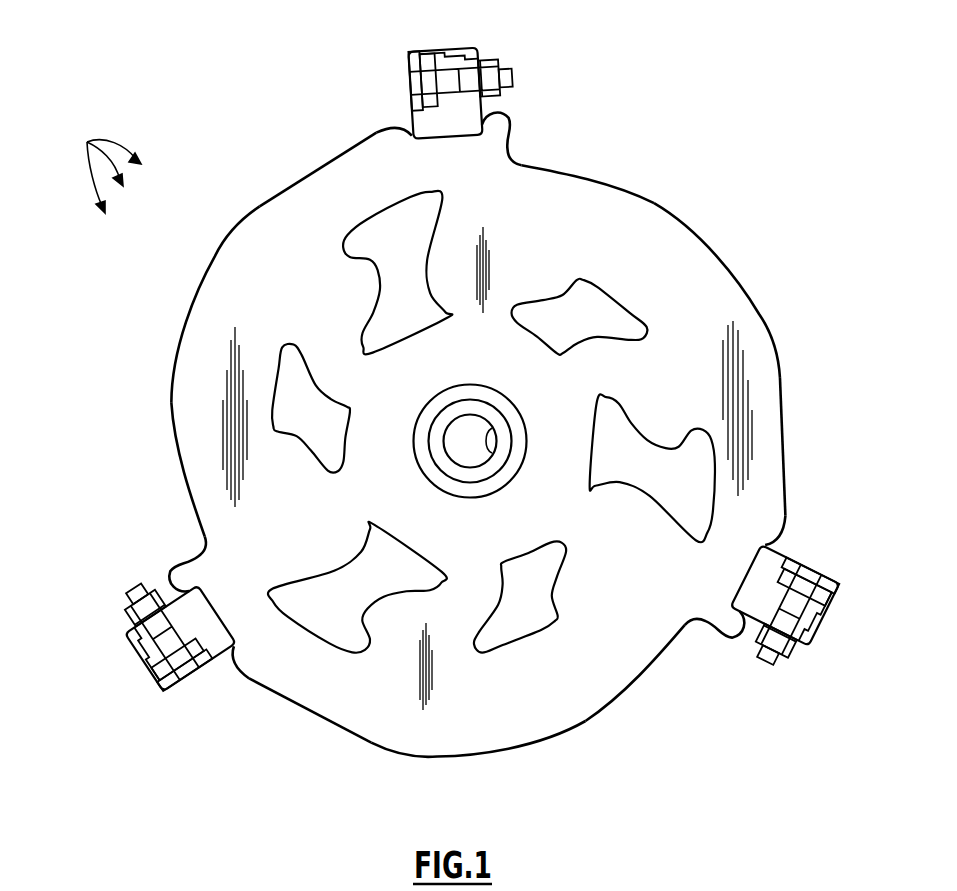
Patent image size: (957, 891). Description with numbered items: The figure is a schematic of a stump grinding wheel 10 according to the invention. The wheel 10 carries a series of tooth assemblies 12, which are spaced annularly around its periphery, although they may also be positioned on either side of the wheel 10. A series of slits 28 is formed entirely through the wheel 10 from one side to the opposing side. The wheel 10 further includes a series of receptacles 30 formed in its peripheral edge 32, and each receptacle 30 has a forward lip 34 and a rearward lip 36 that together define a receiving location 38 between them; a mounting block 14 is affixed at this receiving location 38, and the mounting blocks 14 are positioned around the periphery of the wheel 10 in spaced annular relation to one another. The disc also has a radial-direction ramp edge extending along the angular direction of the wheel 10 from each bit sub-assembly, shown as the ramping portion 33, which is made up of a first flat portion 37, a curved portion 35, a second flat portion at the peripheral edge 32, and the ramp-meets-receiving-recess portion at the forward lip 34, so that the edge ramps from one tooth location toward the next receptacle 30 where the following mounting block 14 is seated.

The stump grinding wheel 10 is at (199, 103).
The tooth assembly 12 is at (217, 311).
The mounting block 14 is at (458, 60).
The slit 28 is at (560, 313).
The receptacle 30 is at (482, 369).
The peripheral edge 32 is at (277, 190).
The ramping portion 33 is at (99, 172).
The forward lip 34 is at (392, 117).
The curved portion 35 is at (212, 246).
The rearward lip 36 is at (530, 118).
The first flat portion 37 is at (180, 368).
The receiving location 38 is at (440, 140).